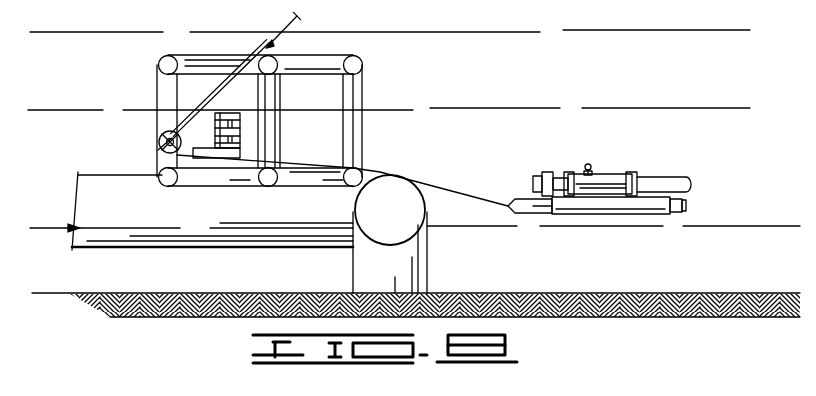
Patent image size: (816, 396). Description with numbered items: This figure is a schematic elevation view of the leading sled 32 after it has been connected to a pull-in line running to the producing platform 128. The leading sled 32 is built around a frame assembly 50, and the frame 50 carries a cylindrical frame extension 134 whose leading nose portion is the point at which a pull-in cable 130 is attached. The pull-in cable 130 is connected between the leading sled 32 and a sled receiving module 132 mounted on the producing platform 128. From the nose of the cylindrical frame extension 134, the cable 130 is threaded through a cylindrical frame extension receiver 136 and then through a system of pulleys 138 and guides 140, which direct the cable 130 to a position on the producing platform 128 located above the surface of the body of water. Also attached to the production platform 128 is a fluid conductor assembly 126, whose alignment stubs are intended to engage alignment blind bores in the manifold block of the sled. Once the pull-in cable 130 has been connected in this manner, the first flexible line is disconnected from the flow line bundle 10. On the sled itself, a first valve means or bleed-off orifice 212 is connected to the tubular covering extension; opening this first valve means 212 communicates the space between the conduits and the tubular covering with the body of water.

The flow line bundle 10 is at (666, 178).
The leading sled 32 is at (606, 176).
The frame assembly 50 is at (612, 203).
The fluid conductor assembly 126 is at (215, 132).
The producing platform 128 is at (400, 228).
The pull-in cable 130 is at (290, 26).
The sled receiving module 132 is at (364, 83).
The cylindrical frame extension 134 is at (523, 200).
The cylindrical frame extension receiver 136 is at (204, 162).
The pulleys 138 is at (159, 146).
The guides 140 is at (230, 88).
The first valve means 212 is at (585, 165).